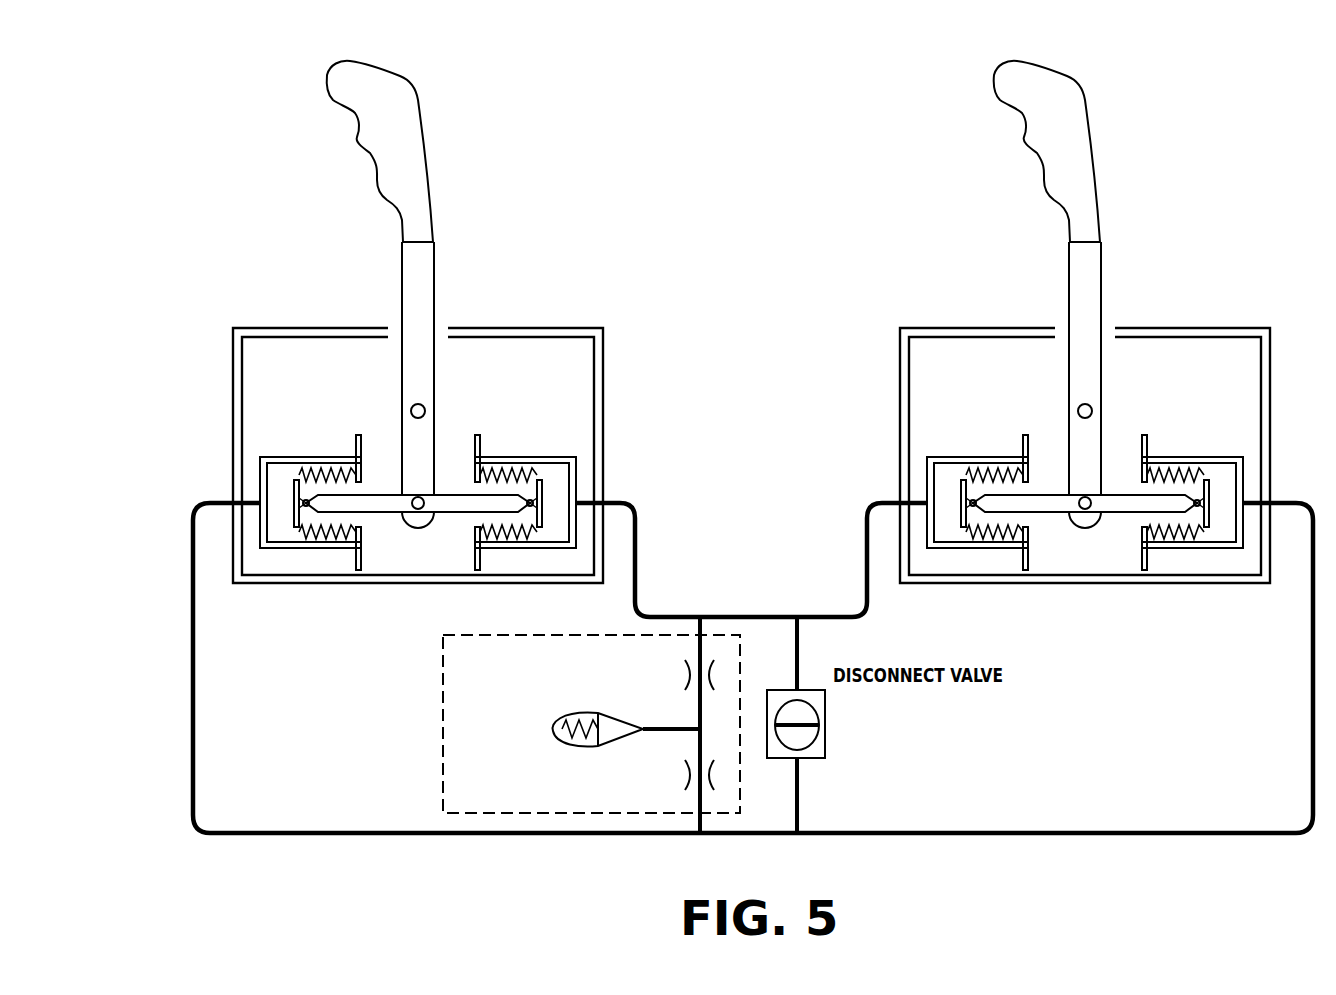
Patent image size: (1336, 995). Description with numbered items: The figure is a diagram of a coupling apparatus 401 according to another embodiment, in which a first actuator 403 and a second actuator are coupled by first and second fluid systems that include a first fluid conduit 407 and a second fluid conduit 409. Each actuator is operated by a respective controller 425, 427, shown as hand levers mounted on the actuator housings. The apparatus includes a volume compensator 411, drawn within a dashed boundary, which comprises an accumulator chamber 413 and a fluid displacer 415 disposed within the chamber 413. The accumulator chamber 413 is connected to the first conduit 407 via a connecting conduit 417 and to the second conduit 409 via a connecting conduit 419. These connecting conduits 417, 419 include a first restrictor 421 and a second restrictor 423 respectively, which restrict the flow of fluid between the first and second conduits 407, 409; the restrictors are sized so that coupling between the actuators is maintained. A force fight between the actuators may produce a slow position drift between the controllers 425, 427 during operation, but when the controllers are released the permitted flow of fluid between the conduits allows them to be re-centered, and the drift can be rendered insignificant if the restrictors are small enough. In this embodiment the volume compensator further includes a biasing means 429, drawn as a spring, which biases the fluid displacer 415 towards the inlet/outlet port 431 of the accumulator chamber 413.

The coupling apparatus 401 is at (780, 280).
The first actuator 403 is at (604, 371).
The first fluid conduit 407 is at (603, 835).
The second fluid conduit 409 is at (758, 615).
The volume compensator 411 is at (525, 816).
The accumulator chamber 413 is at (627, 748).
The fluid displacer 415 is at (592, 715).
The connecting conduit 417 is at (703, 818).
The connecting conduit 419 is at (697, 648).
The first restrictor 421 is at (708, 775).
The second restrictor 423 is at (710, 682).
The controller 425 is at (422, 282).
The controller 427 is at (1089, 282).
The biasing means 429 is at (580, 748).
The inlet/outlet port 431 is at (663, 733).